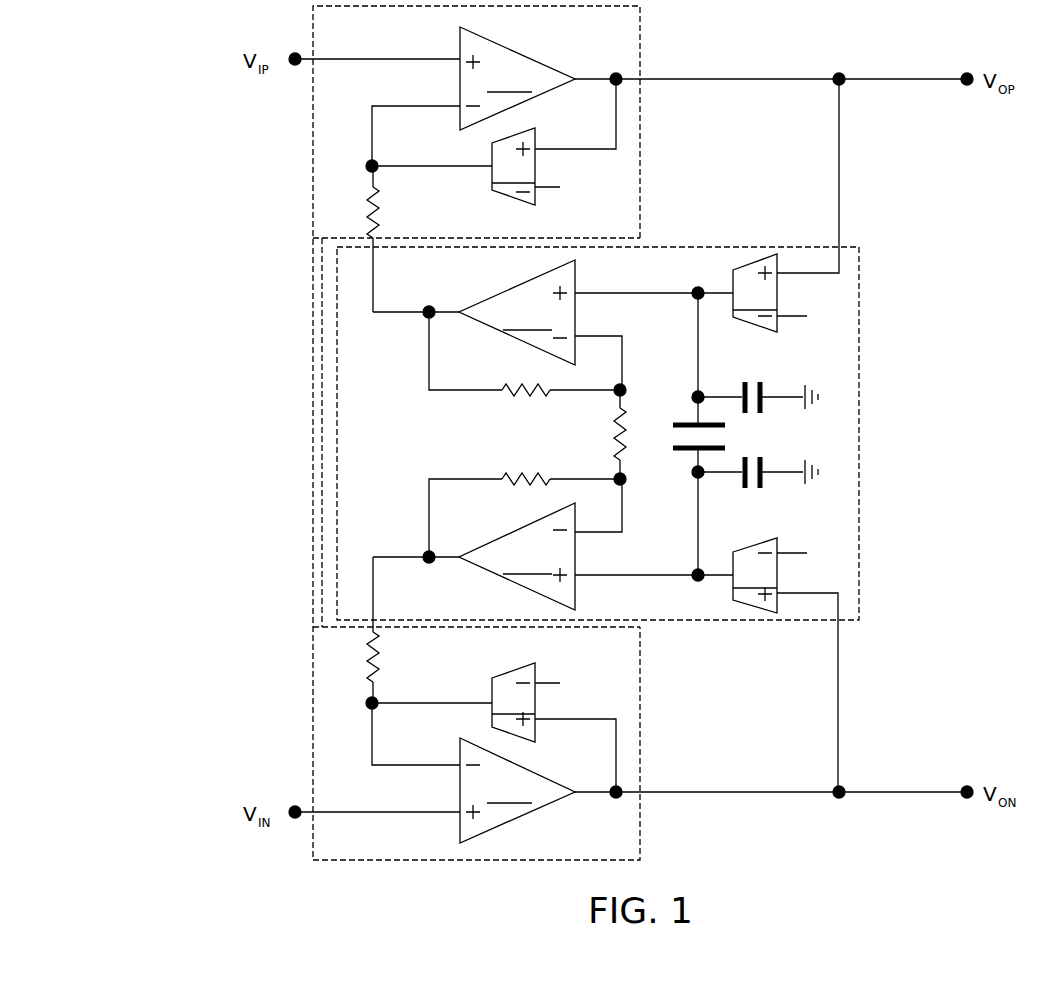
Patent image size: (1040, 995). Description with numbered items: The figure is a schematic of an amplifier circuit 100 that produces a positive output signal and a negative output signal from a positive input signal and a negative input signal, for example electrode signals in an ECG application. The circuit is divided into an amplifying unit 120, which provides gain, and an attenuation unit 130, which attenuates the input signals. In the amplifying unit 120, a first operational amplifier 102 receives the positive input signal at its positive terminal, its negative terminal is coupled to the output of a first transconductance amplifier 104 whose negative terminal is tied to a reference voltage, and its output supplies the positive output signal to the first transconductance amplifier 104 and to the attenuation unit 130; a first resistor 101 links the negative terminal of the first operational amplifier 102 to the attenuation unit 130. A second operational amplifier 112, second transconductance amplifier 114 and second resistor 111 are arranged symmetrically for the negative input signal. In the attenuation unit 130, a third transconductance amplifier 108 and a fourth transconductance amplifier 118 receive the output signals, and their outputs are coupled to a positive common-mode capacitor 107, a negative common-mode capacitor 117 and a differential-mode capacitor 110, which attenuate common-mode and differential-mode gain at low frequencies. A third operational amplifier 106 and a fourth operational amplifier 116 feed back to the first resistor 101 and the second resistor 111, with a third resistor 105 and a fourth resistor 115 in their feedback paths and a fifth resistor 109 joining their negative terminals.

The amplifier circuit 100 is at (493, 433).
The first resistor 101 is at (350, 239).
The first operational amplifier 102 is at (473, 96).
The first transconductance amplifier 104 is at (494, 142).
The third resistor 105 is at (524, 354).
The third operational amplifier 106 is at (553, 325).
The positive common-mode capacitor 107 is at (758, 386).
The third transconductance amplifier 108 is at (786, 205).
The fifth resistor 109 is at (602, 434).
The differential-mode capacitor 110 is at (691, 434).
The second resistor 111 is at (351, 630).
The second operational amplifier 112 is at (473, 773).
The second transconductance amplifier 114 is at (494, 727).
The fourth resistor 115 is at (524, 515).
The fourth operational amplifier 116 is at (553, 544).
The negative common-mode capacitor 117 is at (758, 487).
The fourth transconductance amplifier 118 is at (785, 665).
The amplifying unit 120 is at (313, 157).
The attenuation unit 130 is at (859, 353).